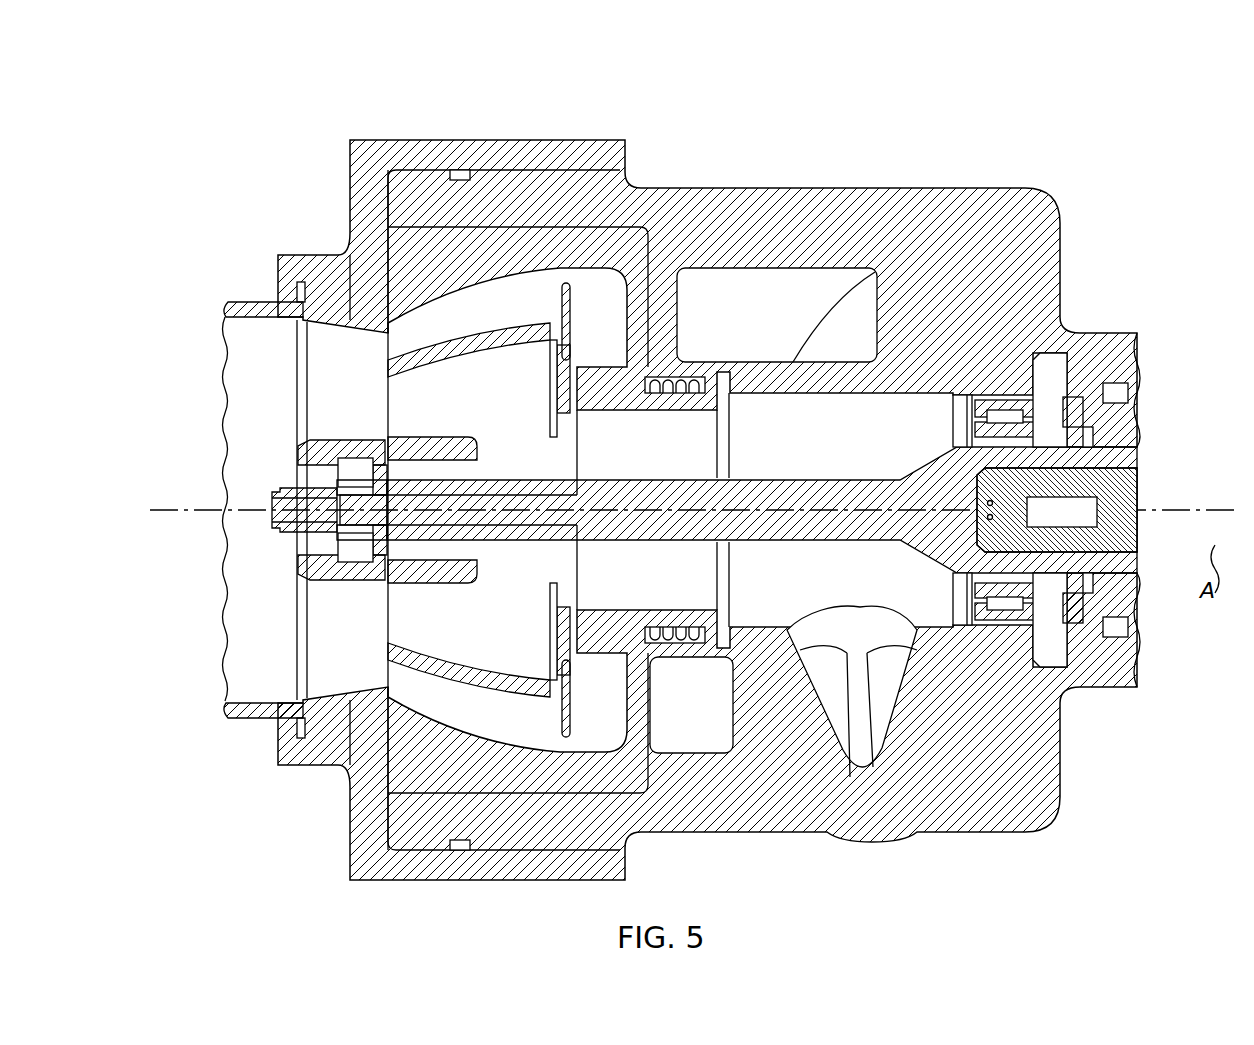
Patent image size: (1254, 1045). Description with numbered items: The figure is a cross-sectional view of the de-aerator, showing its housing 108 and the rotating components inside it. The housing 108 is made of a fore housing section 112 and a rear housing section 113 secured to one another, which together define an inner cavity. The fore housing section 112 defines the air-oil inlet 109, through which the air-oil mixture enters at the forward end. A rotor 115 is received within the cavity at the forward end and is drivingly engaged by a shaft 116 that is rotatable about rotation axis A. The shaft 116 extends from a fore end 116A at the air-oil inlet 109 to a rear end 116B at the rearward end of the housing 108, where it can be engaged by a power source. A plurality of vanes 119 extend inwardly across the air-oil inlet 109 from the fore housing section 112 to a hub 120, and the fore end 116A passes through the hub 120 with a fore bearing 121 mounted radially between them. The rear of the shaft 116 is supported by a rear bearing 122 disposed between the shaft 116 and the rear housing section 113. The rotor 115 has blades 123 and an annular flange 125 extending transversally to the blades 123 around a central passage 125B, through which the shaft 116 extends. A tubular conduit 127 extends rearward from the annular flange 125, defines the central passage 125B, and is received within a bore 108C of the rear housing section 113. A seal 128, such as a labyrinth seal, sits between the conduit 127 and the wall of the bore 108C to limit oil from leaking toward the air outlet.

The housing 108 is at (770, 174).
The bore 108C is at (688, 377).
The air-oil inlet 109 is at (256, 577).
The fore housing section 112 is at (456, 140).
The rear housing section 113 is at (930, 212).
The rotor 115 is at (427, 278).
The shaft 116 is at (848, 520).
The fore end 116A is at (292, 492).
The rear end 116B is at (1082, 428).
The vanes 119 is at (330, 372).
The hub 120 is at (342, 448).
The fore bearing 121 is at (346, 590).
The rear bearing 122 is at (1048, 376).
The blades 123 is at (457, 397).
The annular flange 125 is at (553, 330).
The central passage 125B is at (667, 451).
The conduit 127 is at (603, 388).
The seal 128 is at (680, 660).